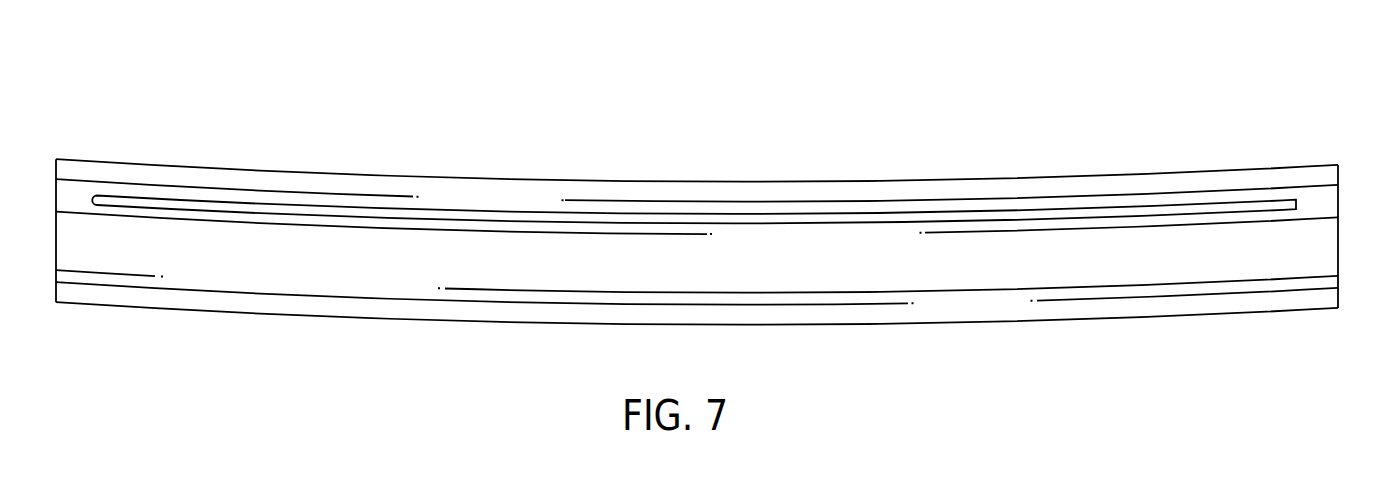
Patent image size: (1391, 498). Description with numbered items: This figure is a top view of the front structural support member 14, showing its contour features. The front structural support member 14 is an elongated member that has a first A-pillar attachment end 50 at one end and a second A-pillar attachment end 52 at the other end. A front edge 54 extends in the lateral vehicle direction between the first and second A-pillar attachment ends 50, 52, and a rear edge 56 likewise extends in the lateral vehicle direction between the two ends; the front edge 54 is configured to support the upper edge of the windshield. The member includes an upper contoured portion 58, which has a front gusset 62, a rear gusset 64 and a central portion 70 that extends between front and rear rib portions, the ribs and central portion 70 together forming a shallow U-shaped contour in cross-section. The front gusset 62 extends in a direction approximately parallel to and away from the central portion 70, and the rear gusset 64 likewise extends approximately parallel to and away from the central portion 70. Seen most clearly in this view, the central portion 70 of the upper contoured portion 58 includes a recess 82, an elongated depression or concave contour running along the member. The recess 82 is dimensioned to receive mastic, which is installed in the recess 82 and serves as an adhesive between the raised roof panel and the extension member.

The front structural support member 14 is at (508, 64).
The first A-pillar attachment end 50 is at (1339, 227).
The second A-pillar attachment end 52 is at (56, 223).
The front edge 54 is at (358, 318).
The rear edge 56 is at (387, 176).
The upper contoured portion 58 is at (713, 168).
The front gusset 62 is at (1002, 310).
The rear gusset 64 is at (942, 192).
The central portion 70 is at (1117, 256).
The recess 82 is at (1061, 213).